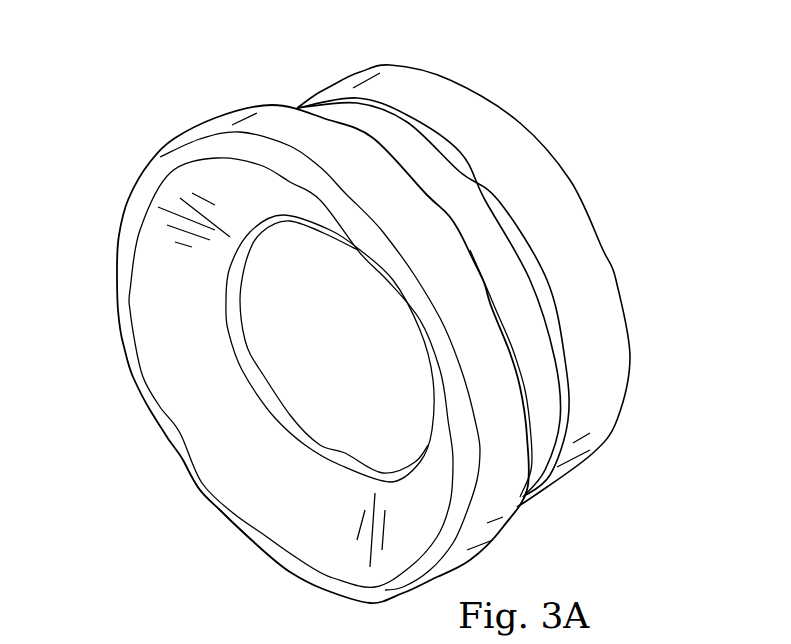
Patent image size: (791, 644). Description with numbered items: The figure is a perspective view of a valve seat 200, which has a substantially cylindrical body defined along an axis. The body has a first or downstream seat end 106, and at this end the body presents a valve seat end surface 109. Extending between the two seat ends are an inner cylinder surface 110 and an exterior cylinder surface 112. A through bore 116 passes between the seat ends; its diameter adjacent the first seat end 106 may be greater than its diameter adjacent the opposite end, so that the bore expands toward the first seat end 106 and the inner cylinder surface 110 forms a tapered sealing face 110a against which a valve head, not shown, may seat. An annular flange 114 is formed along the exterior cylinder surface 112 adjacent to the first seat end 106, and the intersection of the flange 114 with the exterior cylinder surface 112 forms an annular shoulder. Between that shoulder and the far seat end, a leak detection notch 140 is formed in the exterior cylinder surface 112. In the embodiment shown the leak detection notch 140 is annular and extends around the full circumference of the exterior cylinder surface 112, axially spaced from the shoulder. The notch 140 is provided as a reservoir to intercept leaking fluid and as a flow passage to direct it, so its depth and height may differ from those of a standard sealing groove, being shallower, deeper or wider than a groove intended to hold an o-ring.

The first seat end 106 is at (153, 176).
The valve seat end surface 109 is at (117, 287).
The inner cylinder surface 110 is at (343, 450).
The tapered sealing face 110a is at (213, 470).
The exterior cylinder surface 112 is at (457, 92).
The annular flange 114 is at (217, 114).
The through bore 116 is at (275, 343).
The leak detection notch 140 is at (531, 240).
The valve seat 200 is at (556, 86).